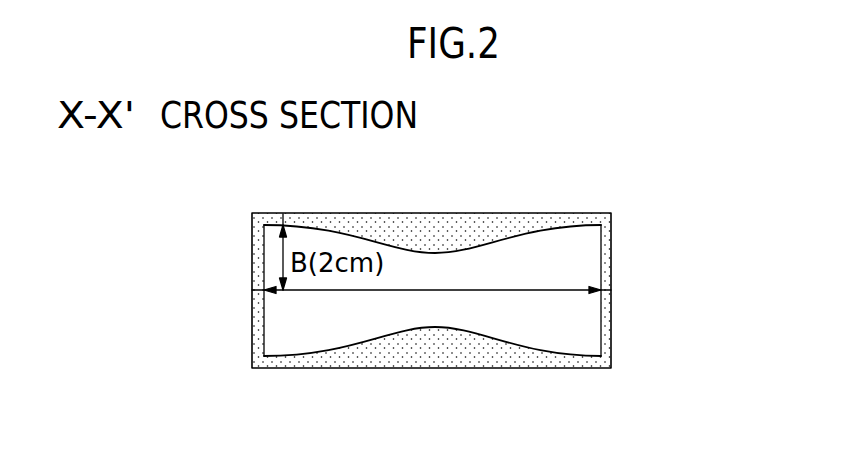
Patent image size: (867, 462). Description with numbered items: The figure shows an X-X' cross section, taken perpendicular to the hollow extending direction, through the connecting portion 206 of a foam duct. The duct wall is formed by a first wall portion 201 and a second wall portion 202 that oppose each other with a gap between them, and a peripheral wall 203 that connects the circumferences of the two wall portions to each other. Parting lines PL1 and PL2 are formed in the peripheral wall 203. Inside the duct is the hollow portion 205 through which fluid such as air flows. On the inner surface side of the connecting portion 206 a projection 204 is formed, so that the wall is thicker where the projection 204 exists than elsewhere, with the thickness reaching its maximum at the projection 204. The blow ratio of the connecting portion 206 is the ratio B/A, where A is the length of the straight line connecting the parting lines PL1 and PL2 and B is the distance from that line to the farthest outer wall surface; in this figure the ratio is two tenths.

The first wall portion 201 is at (438, 213).
The second wall portion 202 is at (455, 368).
The peripheral wall 203 is at (252, 257).
The projection 204 is at (442, 242).
The hollow portion 205 is at (578, 275).
The connecting portion 206 is at (592, 182).
The parting line PL1 is at (252, 290).
The parting line PL2 is at (611, 290).